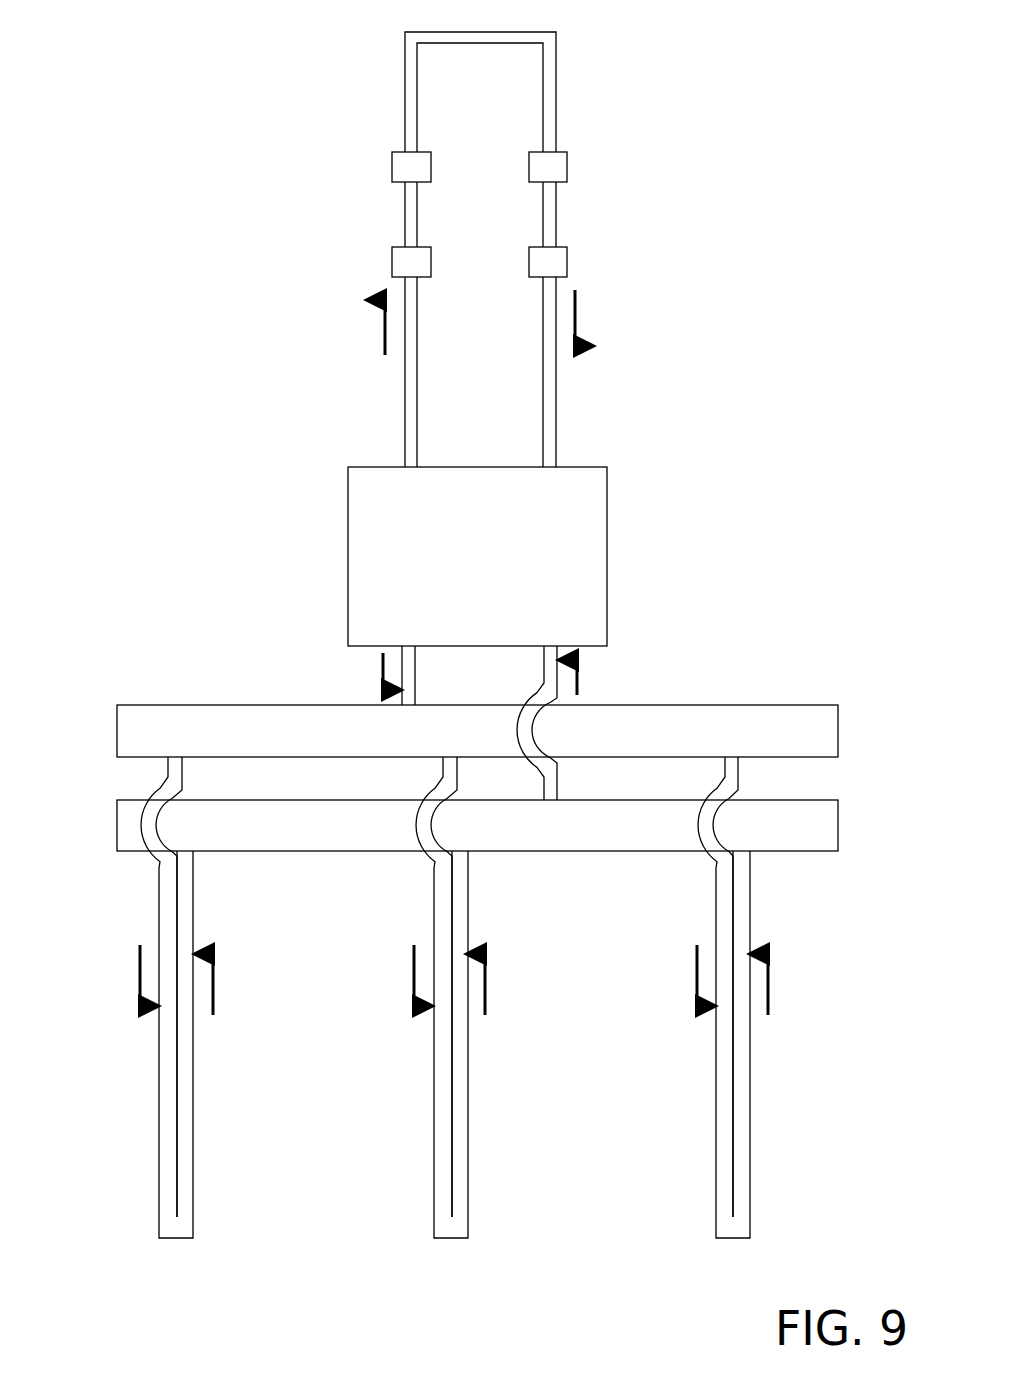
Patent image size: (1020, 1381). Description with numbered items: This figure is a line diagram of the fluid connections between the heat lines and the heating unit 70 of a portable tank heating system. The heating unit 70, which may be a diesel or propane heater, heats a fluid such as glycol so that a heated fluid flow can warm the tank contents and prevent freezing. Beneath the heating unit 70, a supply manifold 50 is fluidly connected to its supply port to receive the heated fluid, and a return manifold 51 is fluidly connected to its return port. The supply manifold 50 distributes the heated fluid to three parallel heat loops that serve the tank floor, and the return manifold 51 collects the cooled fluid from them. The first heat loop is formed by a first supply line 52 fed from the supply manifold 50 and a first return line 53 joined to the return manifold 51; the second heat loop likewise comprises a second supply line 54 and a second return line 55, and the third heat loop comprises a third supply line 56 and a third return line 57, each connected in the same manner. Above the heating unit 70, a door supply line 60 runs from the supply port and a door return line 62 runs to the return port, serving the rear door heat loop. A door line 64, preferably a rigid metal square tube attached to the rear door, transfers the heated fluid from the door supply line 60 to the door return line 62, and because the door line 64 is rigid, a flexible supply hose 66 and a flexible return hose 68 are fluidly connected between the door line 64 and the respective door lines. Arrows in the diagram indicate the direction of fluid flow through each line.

The supply manifold 50 is at (117, 733).
The return manifold 51 is at (117, 828).
The first supply line 52 is at (158, 1154).
The first return line 53 is at (195, 1143).
The second supply line 54 is at (433, 1112).
The second return line 55 is at (469, 1105).
The third supply line 56 is at (713, 1065).
The third return line 57 is at (750, 1057).
The door supply line 60 is at (410, 380).
The door return line 62 is at (555, 380).
The door line 64 is at (495, 35).
The flexible supply hose 66 is at (410, 212).
The flexible return hose 68 is at (555, 212).
The heating unit 70 is at (462, 585).